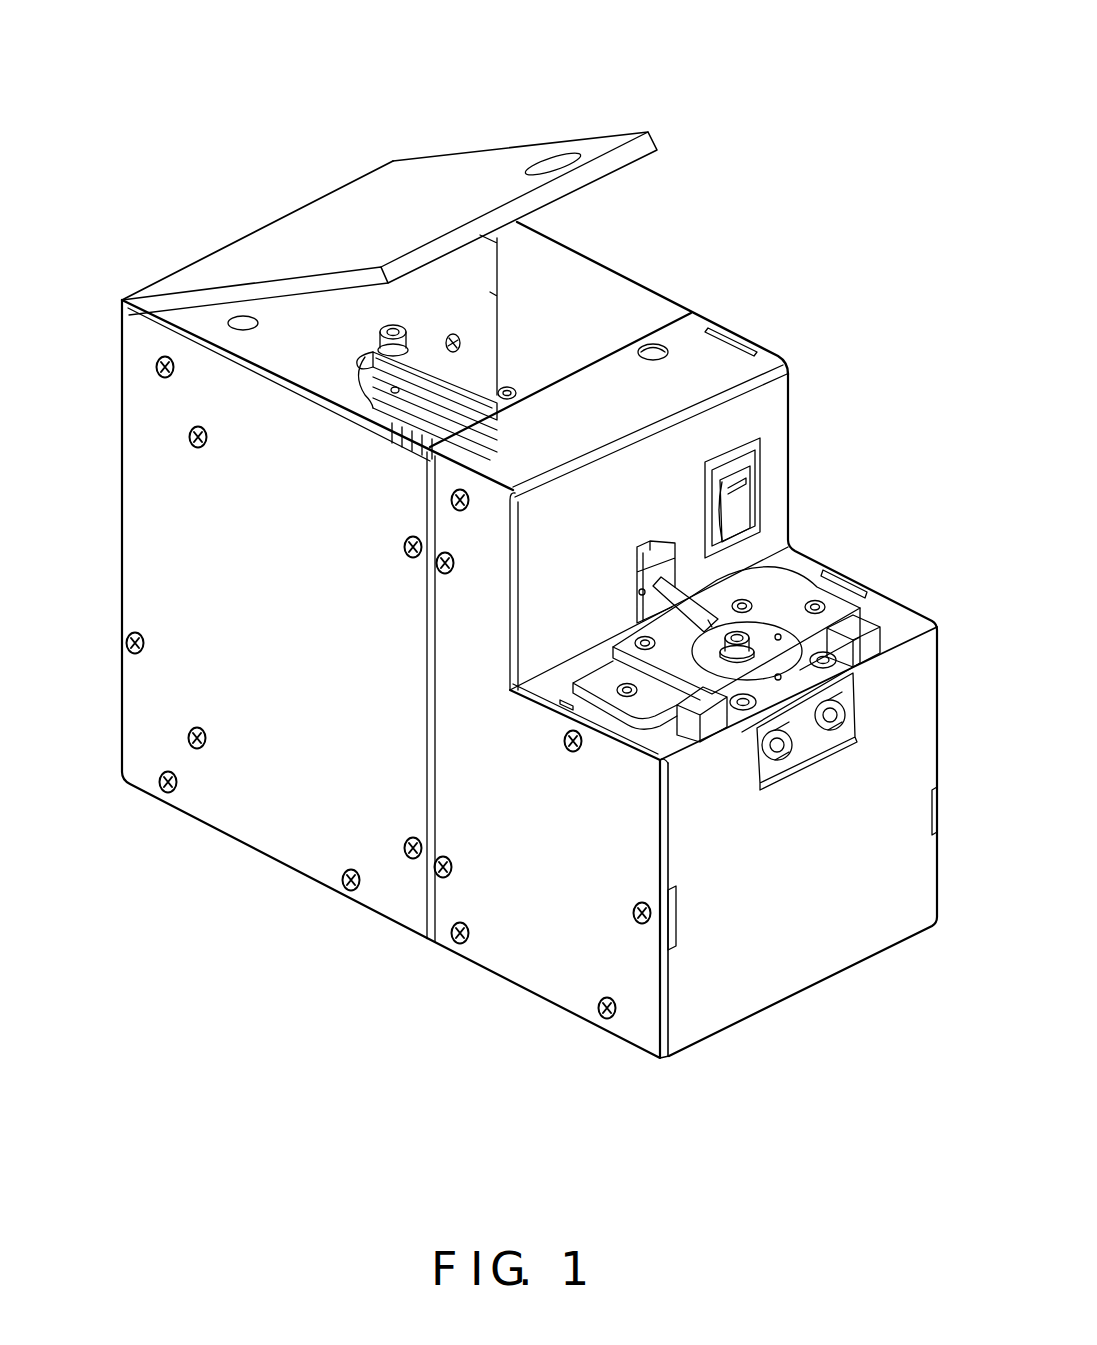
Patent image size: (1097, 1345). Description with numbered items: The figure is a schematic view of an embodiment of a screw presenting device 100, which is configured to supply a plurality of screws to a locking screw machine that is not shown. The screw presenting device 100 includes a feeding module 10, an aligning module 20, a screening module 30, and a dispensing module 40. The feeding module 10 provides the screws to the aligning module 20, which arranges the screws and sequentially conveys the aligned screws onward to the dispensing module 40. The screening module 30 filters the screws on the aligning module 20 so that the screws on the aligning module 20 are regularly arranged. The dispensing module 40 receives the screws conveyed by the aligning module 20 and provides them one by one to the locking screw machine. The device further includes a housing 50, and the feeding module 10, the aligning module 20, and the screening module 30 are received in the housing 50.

The screw presenting device 100 is at (514, 44).
The feeding module 10 is at (320, 370).
The aligning module 20 is at (693, 603).
The screening module 30 is at (458, 375).
The dispensing module 40 is at (780, 653).
The housing 50 is at (650, 288).